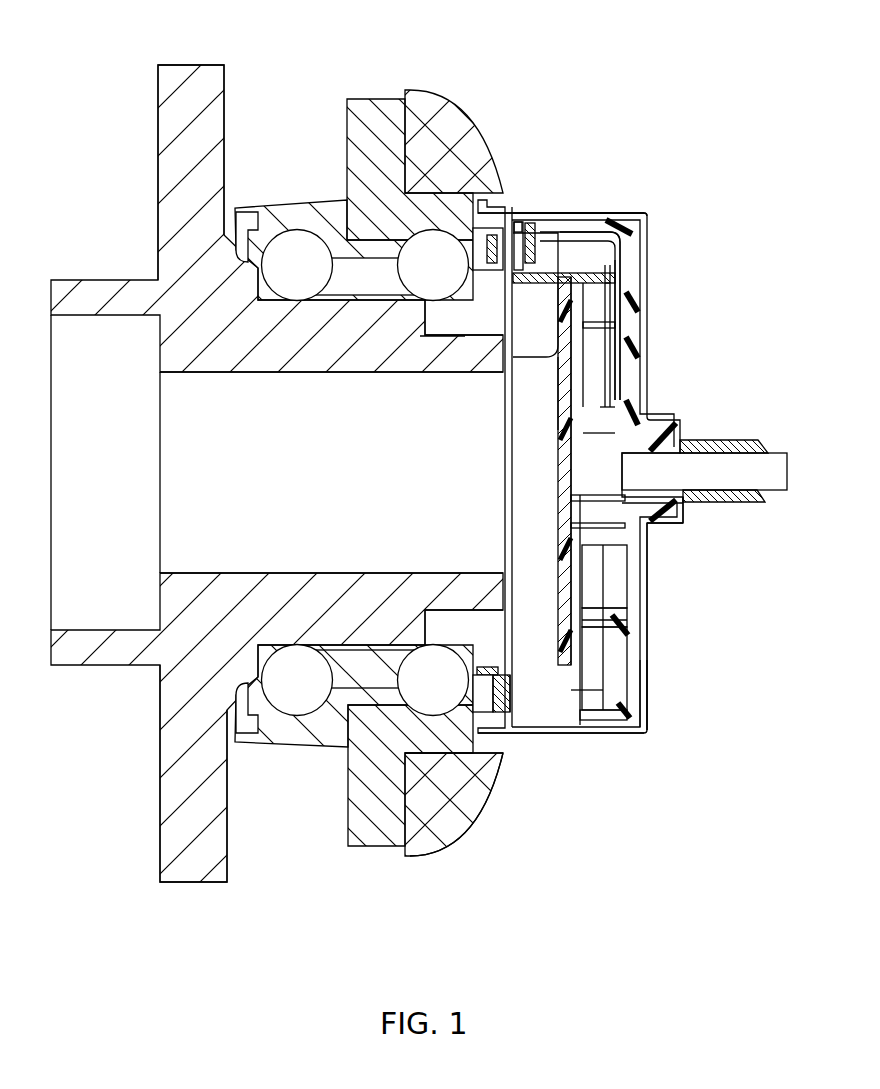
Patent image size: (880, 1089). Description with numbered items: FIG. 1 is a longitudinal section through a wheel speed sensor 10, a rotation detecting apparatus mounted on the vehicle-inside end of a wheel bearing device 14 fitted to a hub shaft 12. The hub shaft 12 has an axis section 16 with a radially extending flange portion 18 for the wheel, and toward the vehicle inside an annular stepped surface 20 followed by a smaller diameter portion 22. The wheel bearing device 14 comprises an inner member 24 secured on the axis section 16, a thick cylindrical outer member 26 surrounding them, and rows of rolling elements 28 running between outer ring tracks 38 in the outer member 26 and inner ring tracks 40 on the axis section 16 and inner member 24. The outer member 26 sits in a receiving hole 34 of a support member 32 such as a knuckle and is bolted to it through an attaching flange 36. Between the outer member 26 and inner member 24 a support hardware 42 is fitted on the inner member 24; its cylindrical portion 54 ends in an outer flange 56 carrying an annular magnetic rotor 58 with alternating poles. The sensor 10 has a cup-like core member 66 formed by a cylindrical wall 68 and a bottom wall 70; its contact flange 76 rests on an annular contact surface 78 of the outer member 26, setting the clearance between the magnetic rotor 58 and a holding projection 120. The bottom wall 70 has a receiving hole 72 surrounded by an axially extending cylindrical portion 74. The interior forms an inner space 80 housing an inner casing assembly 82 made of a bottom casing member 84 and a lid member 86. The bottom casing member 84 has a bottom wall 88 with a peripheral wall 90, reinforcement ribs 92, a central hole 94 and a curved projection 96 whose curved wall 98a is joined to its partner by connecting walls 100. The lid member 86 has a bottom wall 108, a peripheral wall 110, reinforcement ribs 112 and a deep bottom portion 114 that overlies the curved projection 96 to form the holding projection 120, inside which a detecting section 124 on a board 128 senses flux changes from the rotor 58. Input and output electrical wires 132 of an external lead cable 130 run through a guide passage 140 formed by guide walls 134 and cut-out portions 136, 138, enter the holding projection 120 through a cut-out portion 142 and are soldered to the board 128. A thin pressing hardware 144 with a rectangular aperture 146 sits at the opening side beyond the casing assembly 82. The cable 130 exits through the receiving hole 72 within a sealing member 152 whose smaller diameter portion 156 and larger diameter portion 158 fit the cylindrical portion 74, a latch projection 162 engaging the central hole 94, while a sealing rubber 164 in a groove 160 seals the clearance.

The wheel speed sensor 10 is at (657, 205).
The hub shaft 12 is at (145, 258).
The wheel bearing device 14 is at (247, 204).
The axis section 16 is at (272, 374).
The flange portion 18 is at (205, 82).
The annular stepped surface 20 is at (432, 344).
The smaller diameter portion 22 is at (437, 378).
The inner member 24 is at (446, 612).
The outer member 26 is at (326, 215).
The rolling elements 28 is at (298, 708).
The support member 32 is at (436, 818).
The receiving hole 34 is at (380, 752).
The attaching flange 36 is at (395, 118).
The outer ring tracks 38 is at (297, 236).
The inner ring tracks 40 is at (298, 642).
The support hardware 42 is at (515, 700).
The cylindrical portion 54 is at (490, 666).
The outer flange 56 is at (500, 690).
The magnetic rotor 58 is at (494, 226).
The core member 66 is at (655, 718).
The cylindrical wall 68 is at (520, 738).
The bottom wall 70 is at (649, 648).
The receiving hole 72 is at (684, 520).
The cylindrical portion 74 is at (648, 526).
The contact flange 76 is at (466, 152).
The annular contact surface 78 is at (446, 760).
The inner space 80 is at (590, 700).
The inner casing assembly 82 is at (728, 672).
The bottom casing member 84 is at (652, 680).
The lid member 86 is at (652, 712).
The bottom wall 88 is at (630, 580).
The peripheral wall 90 is at (616, 724).
The reinforcement ribs 92 is at (628, 626).
The central hole 94 is at (560, 442).
The curved projection 96 is at (575, 210).
The curved wall 98a is at (604, 226).
The connecting walls 100 is at (625, 238).
The bottom wall 108 is at (578, 556).
The peripheral wall 110 is at (583, 724).
The reinforcement ribs 112 is at (600, 618).
The deep bottom portion 114 is at (520, 222).
The holding projection 120 is at (578, 136).
The detecting section 124 is at (538, 250).
The board 128 is at (533, 228).
The external lead cable 130 is at (787, 460).
The input and output electrical wires 132 is at (624, 348).
The guide walls 134 is at (565, 472).
The cut-out portion 136 is at (612, 330).
The cut-out portion 138 is at (595, 320).
The guide passage 140 is at (612, 368).
The cut-out portion 142 is at (640, 268).
The pressing hardware 144 is at (545, 388).
The rectangular aperture 146 is at (545, 418).
The sealing member 152 is at (742, 438).
The smaller diameter portion 156 is at (738, 500).
The larger diameter portion 158 is at (600, 499).
The groove 160 is at (655, 425).
The latch projection 162 is at (592, 527).
The sealing rubber 164 is at (676, 522).